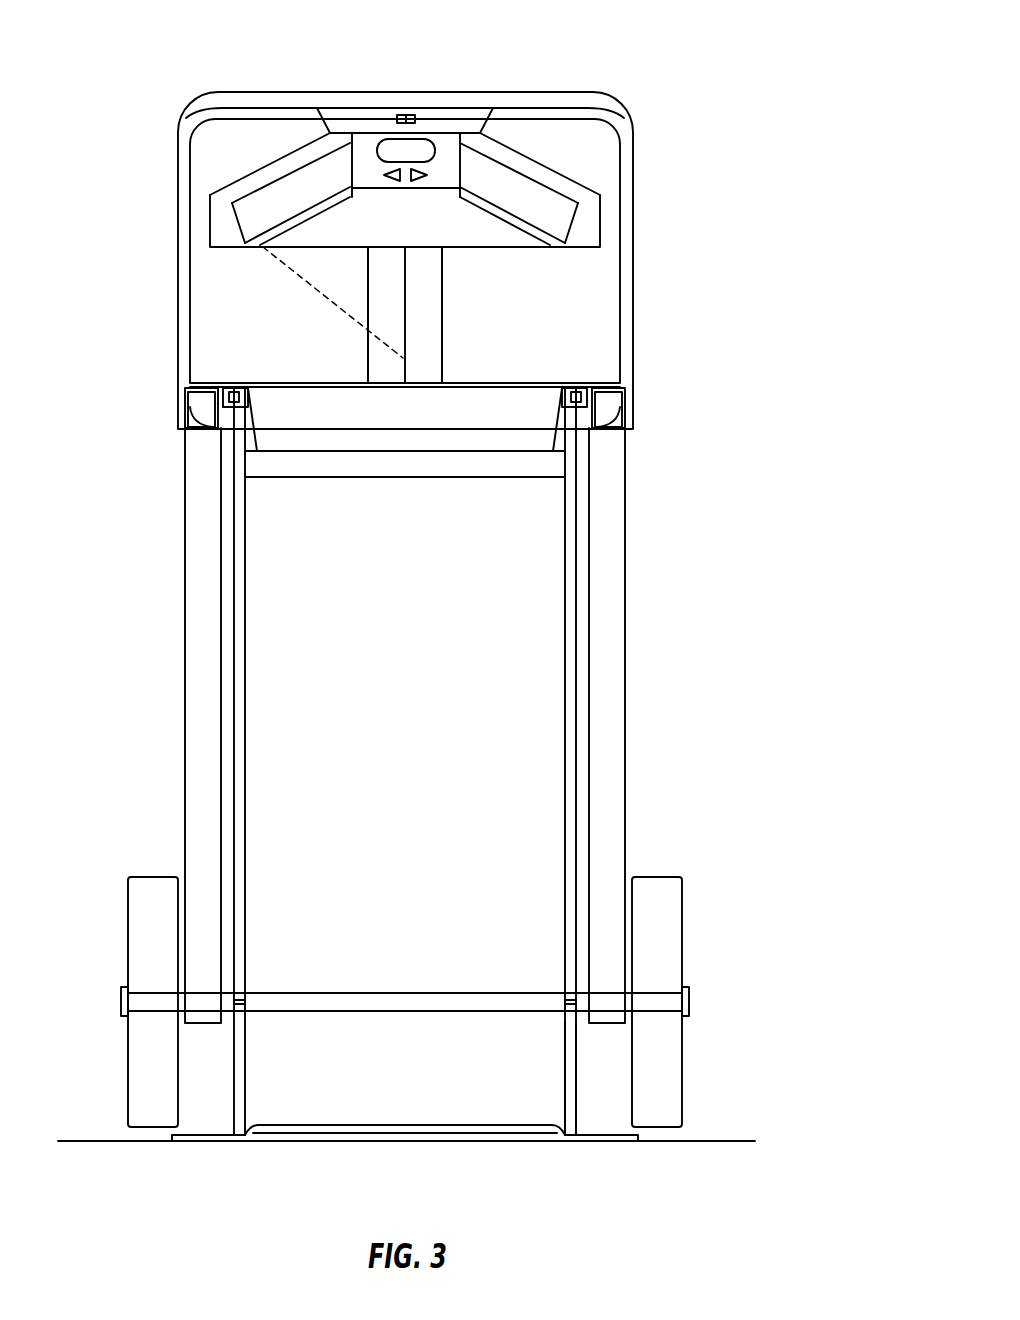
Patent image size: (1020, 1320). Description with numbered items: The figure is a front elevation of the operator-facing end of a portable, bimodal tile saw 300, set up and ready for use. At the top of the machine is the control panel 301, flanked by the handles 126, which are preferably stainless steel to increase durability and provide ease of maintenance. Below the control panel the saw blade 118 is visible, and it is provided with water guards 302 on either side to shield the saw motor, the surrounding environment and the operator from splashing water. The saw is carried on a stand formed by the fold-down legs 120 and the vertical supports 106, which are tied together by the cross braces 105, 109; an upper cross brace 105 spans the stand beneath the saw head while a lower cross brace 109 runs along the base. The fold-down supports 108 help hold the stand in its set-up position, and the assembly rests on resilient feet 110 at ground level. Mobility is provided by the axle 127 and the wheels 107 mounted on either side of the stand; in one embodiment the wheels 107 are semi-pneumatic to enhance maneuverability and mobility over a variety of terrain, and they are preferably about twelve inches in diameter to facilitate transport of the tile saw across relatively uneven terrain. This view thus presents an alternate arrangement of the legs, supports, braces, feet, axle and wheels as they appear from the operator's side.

The hand truck 300 is at (447, 43).
The control panel 301 is at (448, 146).
The handles 126 is at (547, 200).
The saw blade 118 is at (407, 258).
The water guards 302 is at (442, 297).
The fold-down legs 120 is at (625, 593).
The vertical supports 106 is at (565, 725).
The cross brace 105 is at (353, 478).
The axle 127 is at (397, 993).
The wheels 107 is at (655, 876).
The fold-down supports 108 is at (565, 1098).
The cross brace 109 is at (397, 1125).
The resilient feet 110 is at (588, 1142).